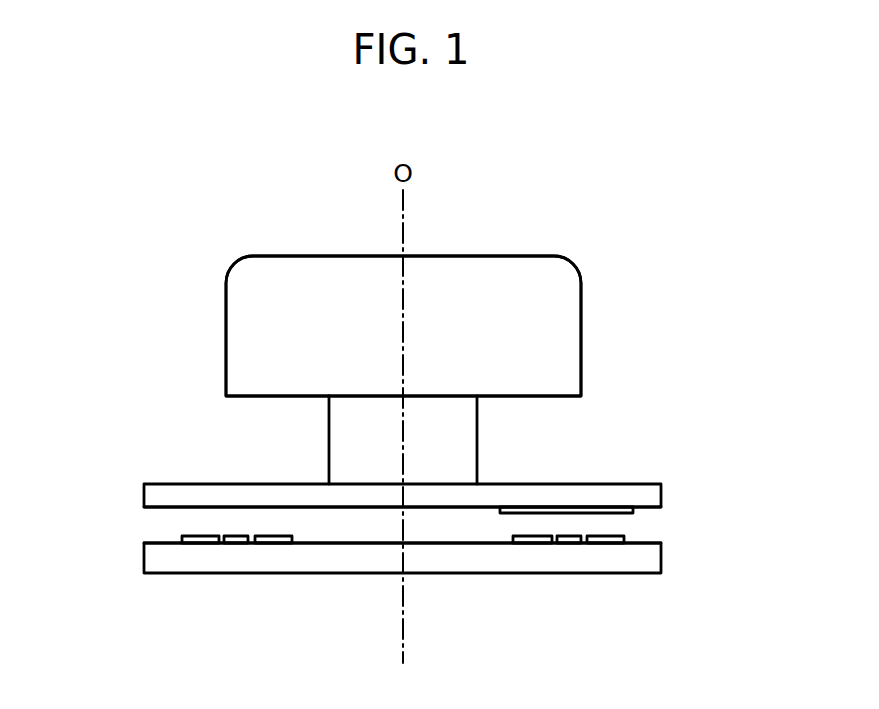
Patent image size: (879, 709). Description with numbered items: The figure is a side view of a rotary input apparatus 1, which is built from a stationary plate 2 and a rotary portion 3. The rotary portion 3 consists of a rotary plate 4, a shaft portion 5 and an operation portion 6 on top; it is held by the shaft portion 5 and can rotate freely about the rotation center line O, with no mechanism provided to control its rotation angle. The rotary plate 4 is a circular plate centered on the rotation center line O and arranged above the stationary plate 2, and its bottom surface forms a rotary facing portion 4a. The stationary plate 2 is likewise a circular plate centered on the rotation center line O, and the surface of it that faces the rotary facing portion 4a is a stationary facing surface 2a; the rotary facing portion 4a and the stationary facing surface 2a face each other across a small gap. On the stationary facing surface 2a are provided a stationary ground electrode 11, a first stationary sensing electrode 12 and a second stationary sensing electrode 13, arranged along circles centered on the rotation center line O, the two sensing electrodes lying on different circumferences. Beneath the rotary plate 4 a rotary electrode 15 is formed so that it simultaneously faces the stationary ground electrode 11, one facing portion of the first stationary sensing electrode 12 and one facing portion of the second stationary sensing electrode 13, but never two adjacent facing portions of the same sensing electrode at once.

The rotary input apparatus 1 is at (640, 218).
The stationary plate 2 is at (455, 565).
The stationary facing surface 2a is at (647, 542).
The rotary portion 3 is at (582, 333).
The rotary plate 4 is at (167, 499).
The rotary facing portion 4a is at (173, 508).
The shaft portion 5 is at (360, 441).
The operation portion 6 is at (255, 343).
The stationary ground electrode 11 is at (232, 543).
The first stationary sensing electrode 12 is at (202, 543).
The second stationary sensing electrode 13 is at (278, 543).
The rotary electrode 15 is at (618, 513).